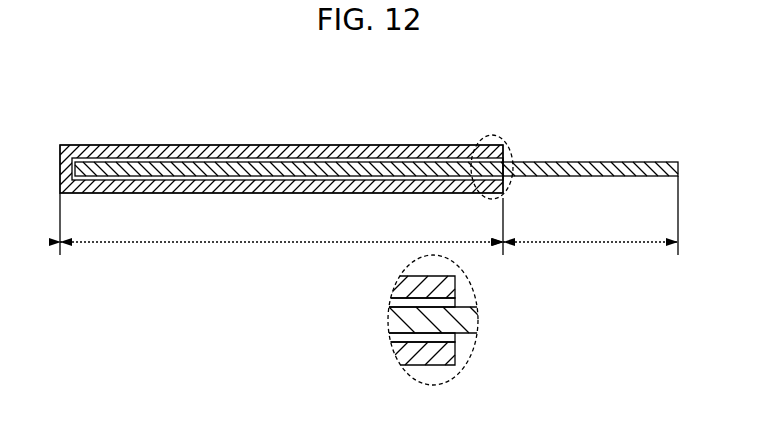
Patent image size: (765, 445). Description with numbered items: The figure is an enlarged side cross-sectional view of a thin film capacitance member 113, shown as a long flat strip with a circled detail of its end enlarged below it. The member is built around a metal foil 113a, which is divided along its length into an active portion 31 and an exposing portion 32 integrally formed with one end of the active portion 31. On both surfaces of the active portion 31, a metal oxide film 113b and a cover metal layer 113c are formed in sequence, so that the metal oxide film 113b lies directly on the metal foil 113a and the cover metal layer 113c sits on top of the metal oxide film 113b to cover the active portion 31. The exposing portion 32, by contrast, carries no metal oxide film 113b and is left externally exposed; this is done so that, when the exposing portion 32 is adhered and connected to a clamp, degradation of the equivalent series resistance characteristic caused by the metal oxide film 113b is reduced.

The thin film capacitance member 113 is at (121, 132).
The metal foil 113a is at (584, 164).
The metal oxide film 113b is at (402, 157).
The cover metal layer 113c is at (250, 145).
The active portion 31 is at (281, 224).
The exposing portion 32 is at (590, 215).